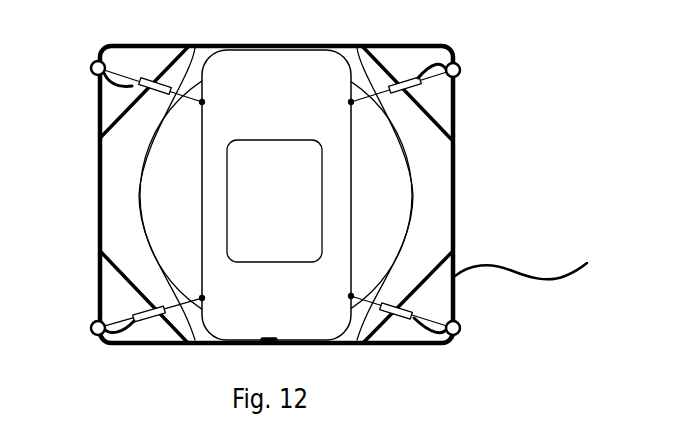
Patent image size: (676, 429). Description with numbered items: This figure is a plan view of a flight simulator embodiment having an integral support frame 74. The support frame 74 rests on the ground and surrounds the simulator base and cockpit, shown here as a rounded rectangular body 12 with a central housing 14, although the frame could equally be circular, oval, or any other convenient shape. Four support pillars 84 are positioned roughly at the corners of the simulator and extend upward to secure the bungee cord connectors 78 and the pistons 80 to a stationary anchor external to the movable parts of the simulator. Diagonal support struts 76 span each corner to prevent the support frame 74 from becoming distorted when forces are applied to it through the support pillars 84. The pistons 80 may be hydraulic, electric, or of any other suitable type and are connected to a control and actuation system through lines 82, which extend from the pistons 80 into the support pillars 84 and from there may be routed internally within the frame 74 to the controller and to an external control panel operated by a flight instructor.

The robotic device body 12 is at (137, 167).
The housing 14 is at (195, 343).
The support frame 74 is at (458, 203).
The support strut 76 is at (441, 122).
The bungee cord connector 78 is at (118, 68).
The piston 80 is at (150, 76).
The line 82 is at (108, 86).
The support pillar 84 is at (92, 62).